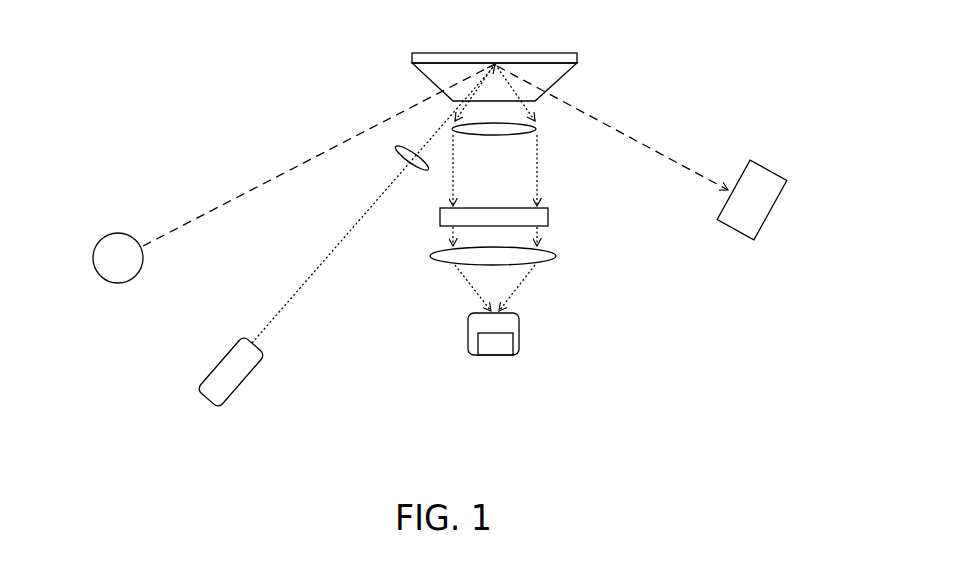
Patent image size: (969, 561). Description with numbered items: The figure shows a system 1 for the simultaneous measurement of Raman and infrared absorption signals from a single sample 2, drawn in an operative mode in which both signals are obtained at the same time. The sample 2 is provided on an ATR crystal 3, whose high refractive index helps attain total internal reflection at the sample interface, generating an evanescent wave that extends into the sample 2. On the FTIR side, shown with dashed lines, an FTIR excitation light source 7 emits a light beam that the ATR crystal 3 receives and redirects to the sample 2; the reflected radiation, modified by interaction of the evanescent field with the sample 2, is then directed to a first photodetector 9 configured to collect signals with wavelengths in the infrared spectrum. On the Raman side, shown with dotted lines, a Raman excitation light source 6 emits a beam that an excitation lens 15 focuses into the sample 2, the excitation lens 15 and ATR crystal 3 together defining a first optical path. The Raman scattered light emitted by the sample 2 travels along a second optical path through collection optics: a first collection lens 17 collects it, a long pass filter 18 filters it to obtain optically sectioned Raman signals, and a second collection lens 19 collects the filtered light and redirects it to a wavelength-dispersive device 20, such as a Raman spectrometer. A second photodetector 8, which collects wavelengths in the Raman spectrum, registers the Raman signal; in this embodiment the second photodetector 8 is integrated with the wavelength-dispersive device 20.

The system 1 is at (798, 368).
The sample 2 is at (528, 60).
The ATR crystal 3 is at (547, 77).
The Raman excitation light source 6 is at (232, 372).
The FTIR excitation light source 7 is at (110, 263).
The second photodetector 8 is at (492, 348).
The first photodetector 9 is at (735, 215).
The excitation lens 15 is at (413, 170).
The first collection lens 17 is at (503, 131).
The long pass filter 18 is at (540, 218).
The second collection lens 19 is at (540, 262).
The wavelength-dispersive device 20 is at (480, 322).